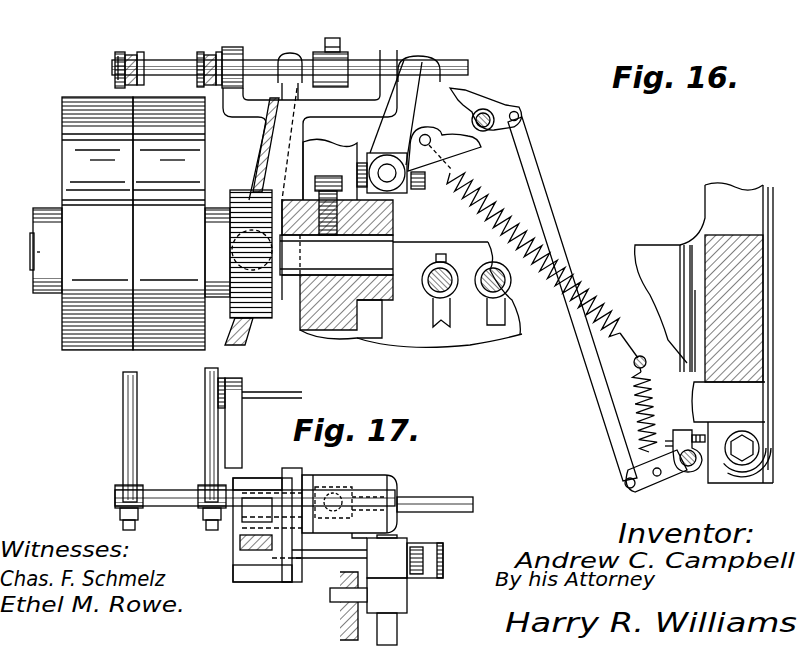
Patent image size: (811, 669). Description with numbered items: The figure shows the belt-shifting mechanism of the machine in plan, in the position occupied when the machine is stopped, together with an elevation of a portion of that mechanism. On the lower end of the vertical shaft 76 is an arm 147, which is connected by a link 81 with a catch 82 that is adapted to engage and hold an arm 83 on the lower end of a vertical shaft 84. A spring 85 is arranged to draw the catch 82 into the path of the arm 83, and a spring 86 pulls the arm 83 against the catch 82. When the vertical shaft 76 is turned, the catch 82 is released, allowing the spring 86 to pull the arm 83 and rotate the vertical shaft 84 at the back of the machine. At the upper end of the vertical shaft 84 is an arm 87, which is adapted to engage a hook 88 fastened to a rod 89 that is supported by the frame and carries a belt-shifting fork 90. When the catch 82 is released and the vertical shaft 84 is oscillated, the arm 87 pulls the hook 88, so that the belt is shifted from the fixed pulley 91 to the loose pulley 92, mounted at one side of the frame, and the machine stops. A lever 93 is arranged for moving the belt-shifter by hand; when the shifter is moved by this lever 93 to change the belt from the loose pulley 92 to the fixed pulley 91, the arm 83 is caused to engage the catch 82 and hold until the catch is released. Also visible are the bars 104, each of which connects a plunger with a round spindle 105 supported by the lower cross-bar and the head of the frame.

In FIG. 16, the vertical shaft 76 is at (691, 474).
In FIG. 16, the link 81 is at (563, 235).
In FIG. 16, the catch 82 is at (475, 101).
In FIG. 16, the arm 83 is at (456, 138).
In FIG. 16, the vertical shaft 84 is at (397, 190).
In FIG. 17, the vertical shaft 84 is at (397, 630).
In FIG. 16, the spring 85 is at (657, 408).
In FIG. 16, the spring 86 is at (546, 270).
In FIG. 16, the arm 87 is at (396, 162).
In FIG. 17, the arm 87 is at (408, 590).
In FIG. 16, the hook 88 is at (424, 75).
In FIG. 17, the hook 88 is at (443, 570).
In FIG. 16, the rod 89 is at (367, 66).
In FIG. 17, the rod 89 is at (432, 499).
In FIG. 16, the belt-shifting fork 90 is at (145, 60).
In FIG. 17, the belt-shifting fork 90 is at (205, 446).
In FIG. 16, the fixed pulley 91 is at (81, 223).
In FIG. 16, the loose pulley 92 is at (202, 223).
In FIG. 16, the lever 93 is at (263, 153).
In FIG. 17, the lever 93 is at (240, 541).
In FIG. 16, the bar 104 is at (488, 318).
In FIG. 16, the round spindle 105 is at (428, 258).
In FIG. 16, the arm 147 is at (653, 488).